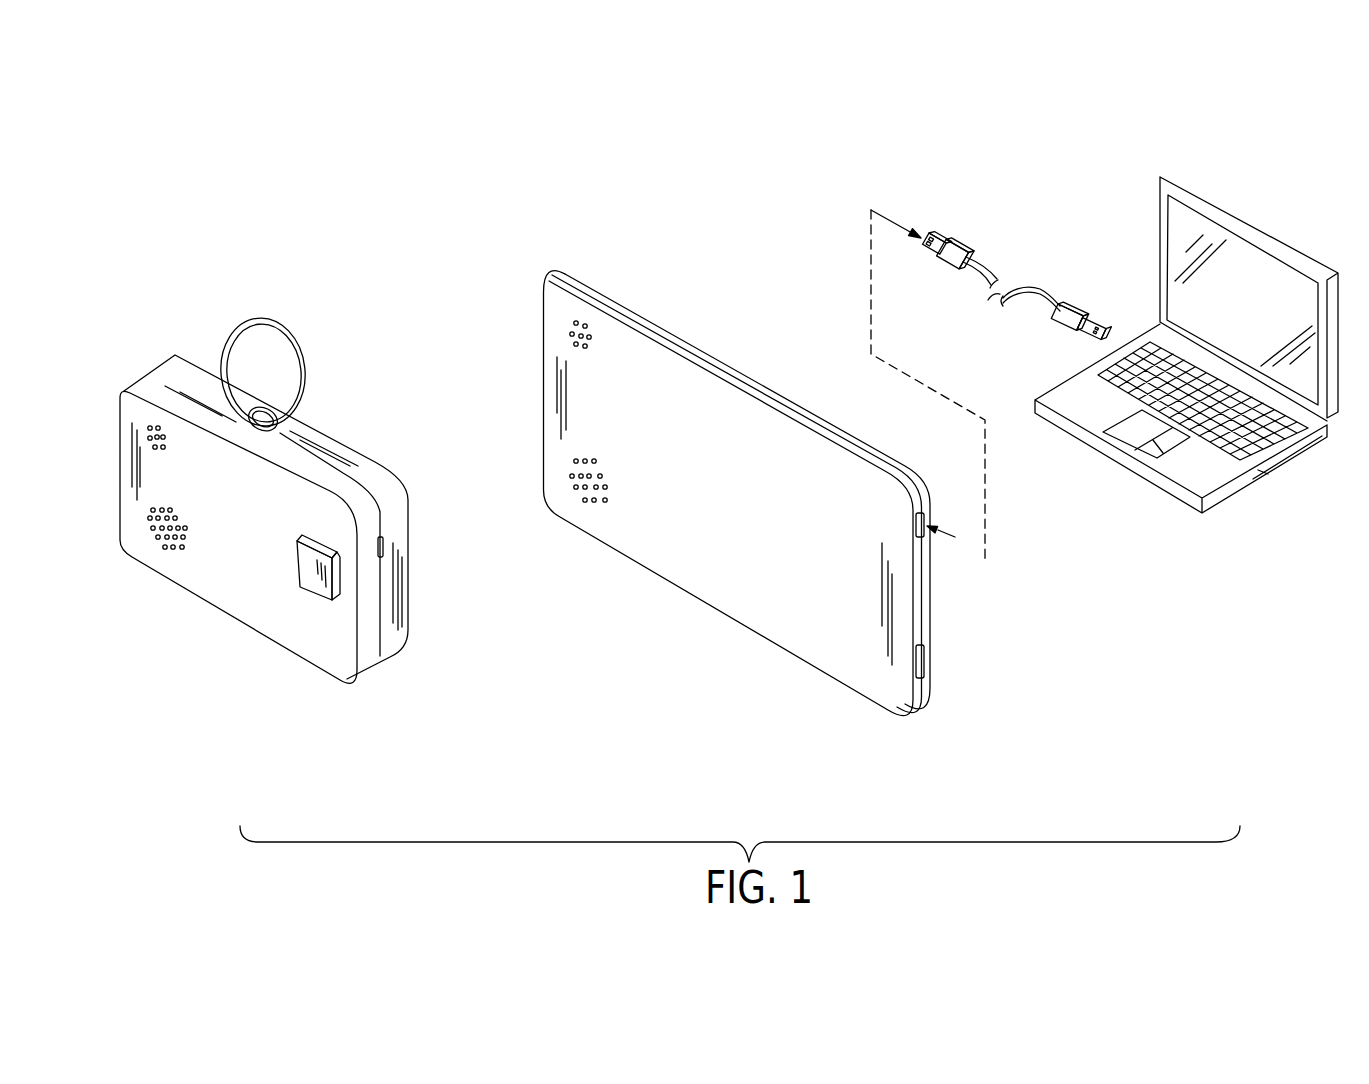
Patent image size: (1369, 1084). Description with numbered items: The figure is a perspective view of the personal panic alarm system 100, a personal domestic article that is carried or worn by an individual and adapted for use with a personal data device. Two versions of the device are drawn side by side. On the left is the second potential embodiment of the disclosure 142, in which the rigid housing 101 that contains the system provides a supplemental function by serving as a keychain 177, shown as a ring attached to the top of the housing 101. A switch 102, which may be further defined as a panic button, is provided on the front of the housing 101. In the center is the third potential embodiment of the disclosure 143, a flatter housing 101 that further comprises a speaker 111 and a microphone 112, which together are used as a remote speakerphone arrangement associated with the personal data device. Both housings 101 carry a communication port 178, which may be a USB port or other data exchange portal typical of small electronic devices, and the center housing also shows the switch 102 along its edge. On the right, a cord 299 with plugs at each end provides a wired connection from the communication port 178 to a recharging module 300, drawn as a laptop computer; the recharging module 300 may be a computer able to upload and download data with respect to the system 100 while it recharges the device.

The personal panic alarm system 100 is at (770, 196).
The housing 101 is at (177, 354).
The switch 102 is at (326, 580).
The speaker 111 is at (152, 530).
The microphone 112 is at (150, 425).
The second potential embodiment of the disclosure 142 is at (345, 452).
The third potential embodiment of the disclosure 143 is at (670, 313).
The keychain 177 is at (277, 326).
The communication port 178 is at (384, 534).
The cord 299 is at (980, 266).
The recharging module 300 is at (1208, 479).